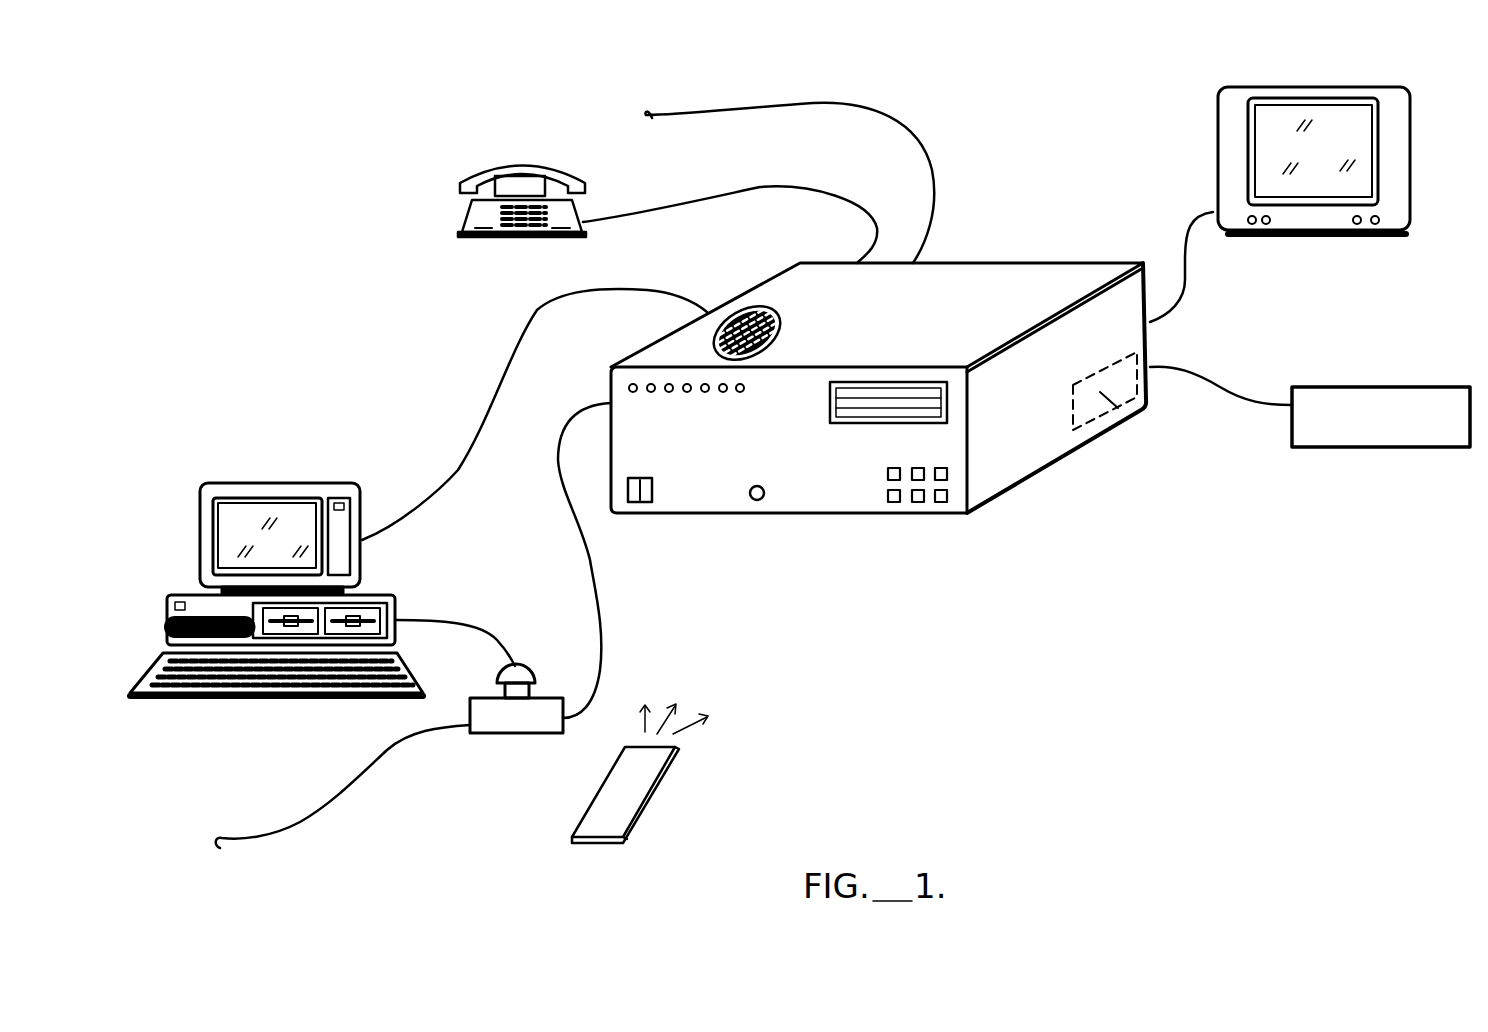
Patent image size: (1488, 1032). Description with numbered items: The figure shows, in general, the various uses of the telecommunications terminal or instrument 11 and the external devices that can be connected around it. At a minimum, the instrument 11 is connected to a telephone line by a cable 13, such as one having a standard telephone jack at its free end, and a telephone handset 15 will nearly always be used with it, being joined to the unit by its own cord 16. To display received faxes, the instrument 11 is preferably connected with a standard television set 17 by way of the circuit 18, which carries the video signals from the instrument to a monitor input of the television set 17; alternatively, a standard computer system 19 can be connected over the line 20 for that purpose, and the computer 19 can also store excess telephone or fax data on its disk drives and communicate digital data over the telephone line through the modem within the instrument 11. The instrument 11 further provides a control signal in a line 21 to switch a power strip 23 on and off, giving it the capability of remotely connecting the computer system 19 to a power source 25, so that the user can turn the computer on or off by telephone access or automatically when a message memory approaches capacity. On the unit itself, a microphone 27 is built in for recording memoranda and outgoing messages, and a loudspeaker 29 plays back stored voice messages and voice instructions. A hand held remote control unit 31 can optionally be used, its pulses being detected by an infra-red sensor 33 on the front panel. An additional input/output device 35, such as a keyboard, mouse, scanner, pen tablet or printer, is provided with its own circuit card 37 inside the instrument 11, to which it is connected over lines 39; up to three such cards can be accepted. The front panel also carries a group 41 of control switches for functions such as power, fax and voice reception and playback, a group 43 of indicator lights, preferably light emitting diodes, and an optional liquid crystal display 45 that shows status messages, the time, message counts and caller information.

The telecommunications instrument 11 is at (1033, 508).
The cable 13 is at (936, 162).
The telephone handset 15 is at (477, 175).
The telephone cord 16 is at (773, 187).
The television set 17 is at (1403, 147).
The circuit 18 is at (1185, 232).
The computer system 19 is at (200, 532).
The line 20 is at (523, 328).
The line 21 is at (596, 577).
The power strip 23 is at (487, 737).
The power source 25 is at (323, 800).
The microphone 27 is at (643, 502).
The loudspeaker 29 is at (742, 313).
The hand held remote control unit 31 is at (648, 803).
The infra-red sensor 33 is at (757, 500).
The additional input/output device 35 is at (1365, 390).
The circuit card 37 is at (1133, 418).
The lines 39 is at (1220, 387).
The group of control switches 41 is at (900, 502).
The group of indicator lights 43 is at (683, 384).
The liquid crystal display 45 is at (868, 387).